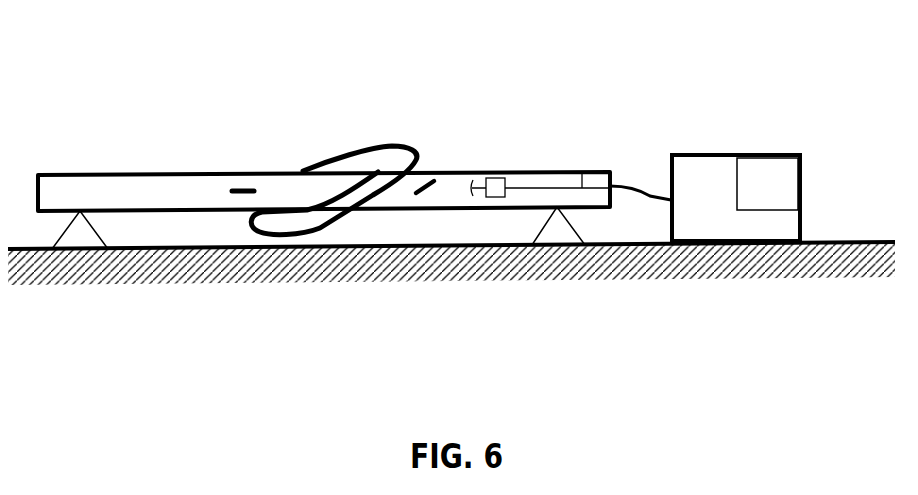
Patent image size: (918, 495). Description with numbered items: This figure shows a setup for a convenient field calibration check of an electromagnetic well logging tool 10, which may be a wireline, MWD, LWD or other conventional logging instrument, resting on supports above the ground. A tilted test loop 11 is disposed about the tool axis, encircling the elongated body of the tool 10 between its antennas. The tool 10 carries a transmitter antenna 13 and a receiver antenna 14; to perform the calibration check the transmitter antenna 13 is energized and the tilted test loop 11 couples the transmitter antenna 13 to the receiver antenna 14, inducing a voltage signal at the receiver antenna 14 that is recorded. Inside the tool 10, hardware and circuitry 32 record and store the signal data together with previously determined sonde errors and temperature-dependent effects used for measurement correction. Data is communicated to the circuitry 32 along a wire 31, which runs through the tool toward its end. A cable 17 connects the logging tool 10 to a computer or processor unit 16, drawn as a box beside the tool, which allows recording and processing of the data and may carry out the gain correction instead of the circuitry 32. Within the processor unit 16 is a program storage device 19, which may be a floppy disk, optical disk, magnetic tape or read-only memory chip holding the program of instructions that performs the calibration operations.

The EM logging tool 10 is at (135, 174).
The tilted test loop 11 is at (373, 145).
The transmitter antenna 13 is at (246, 186).
The receiver antenna 14 is at (434, 180).
The computer (processor unit) 16 is at (704, 154).
The cable 17 is at (640, 188).
The program storage device 19 is at (801, 183).
The wire 31 is at (582, 173).
The hardware and circuitry 32 is at (491, 177).